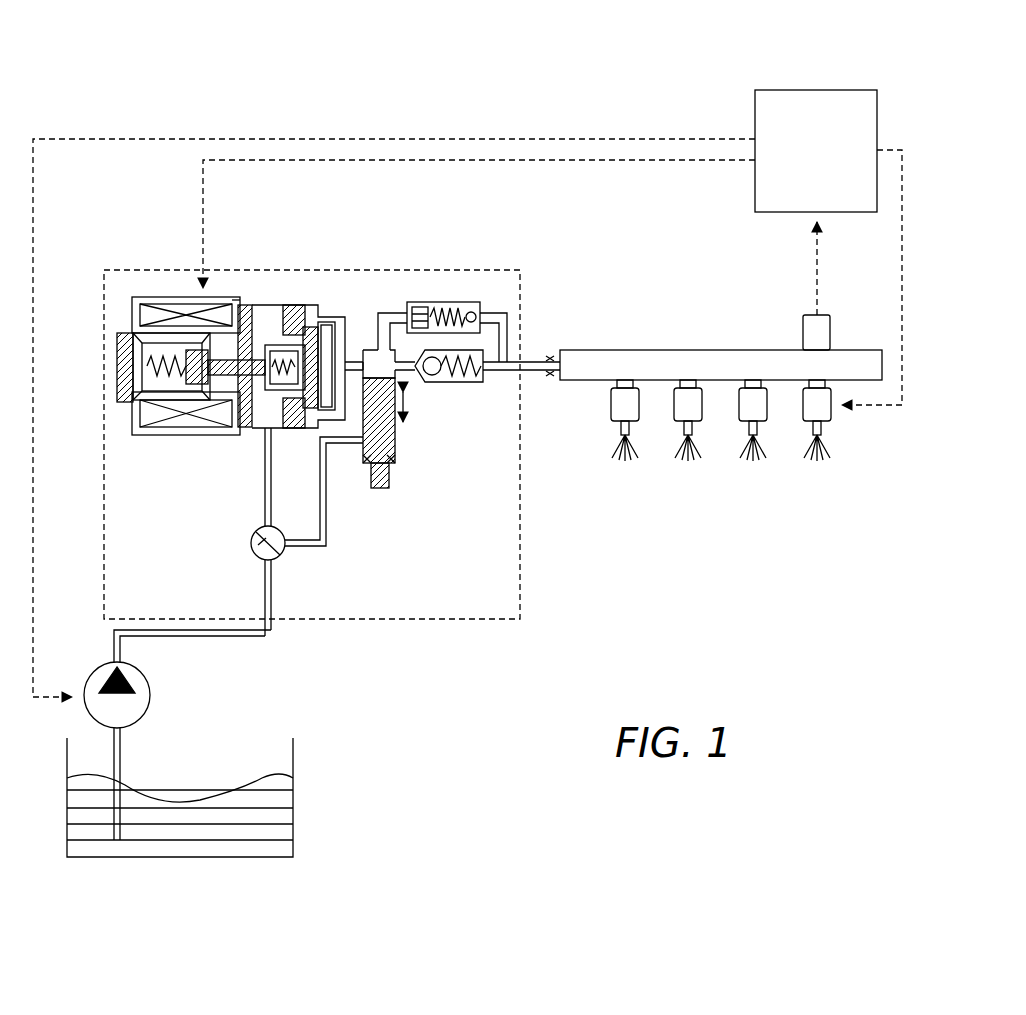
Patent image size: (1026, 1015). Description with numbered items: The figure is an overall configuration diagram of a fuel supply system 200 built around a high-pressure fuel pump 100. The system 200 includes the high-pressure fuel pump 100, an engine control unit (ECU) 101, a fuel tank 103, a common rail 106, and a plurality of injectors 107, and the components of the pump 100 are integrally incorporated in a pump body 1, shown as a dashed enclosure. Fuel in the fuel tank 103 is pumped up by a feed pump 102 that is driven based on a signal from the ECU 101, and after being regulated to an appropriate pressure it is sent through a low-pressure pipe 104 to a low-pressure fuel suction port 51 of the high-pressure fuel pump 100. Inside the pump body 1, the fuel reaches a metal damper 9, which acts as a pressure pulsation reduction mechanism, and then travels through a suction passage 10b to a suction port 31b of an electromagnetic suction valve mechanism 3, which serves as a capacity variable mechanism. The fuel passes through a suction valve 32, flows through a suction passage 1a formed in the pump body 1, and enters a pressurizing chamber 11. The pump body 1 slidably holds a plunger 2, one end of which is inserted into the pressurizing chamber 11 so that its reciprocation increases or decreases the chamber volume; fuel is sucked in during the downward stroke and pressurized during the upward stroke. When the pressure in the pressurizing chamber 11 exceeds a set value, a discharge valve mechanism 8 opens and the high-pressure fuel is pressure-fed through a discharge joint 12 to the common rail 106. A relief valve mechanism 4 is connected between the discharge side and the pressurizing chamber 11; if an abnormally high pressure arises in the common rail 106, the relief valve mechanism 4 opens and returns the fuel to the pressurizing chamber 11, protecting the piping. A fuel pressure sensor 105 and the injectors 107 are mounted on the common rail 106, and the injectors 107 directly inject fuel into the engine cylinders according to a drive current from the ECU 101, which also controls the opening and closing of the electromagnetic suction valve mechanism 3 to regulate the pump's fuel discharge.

The pump body 1 is at (522, 613).
The suction passage 1a is at (352, 357).
The plunger 2 is at (382, 488).
The electromagnetic suction valve mechanism 3 is at (140, 452).
The relief valve mechanism 4 is at (452, 296).
The discharge valve mechanism 8 is at (456, 392).
The metal damper 9 is at (281, 554).
The suction passage 10b is at (263, 434).
The pressurizing chamber 11 is at (380, 360).
The discharge joint 12 is at (534, 360).
The suction port 31b is at (252, 434).
The suction valve 32 is at (306, 322).
The low-pressure fuel suction port 51 is at (273, 637).
The high-pressure fuel pump 100 is at (104, 260).
The engine control unit 101 is at (778, 90).
The feed pump 102 is at (86, 688).
The fuel tank 103 is at (290, 800).
The low-pressure pipe 104 is at (199, 637).
The fuel pressure sensor 105 is at (803, 327).
The common rail 106 is at (612, 360).
The injectors 107 is at (826, 422).
The fuel supply system 200 is at (624, 90).